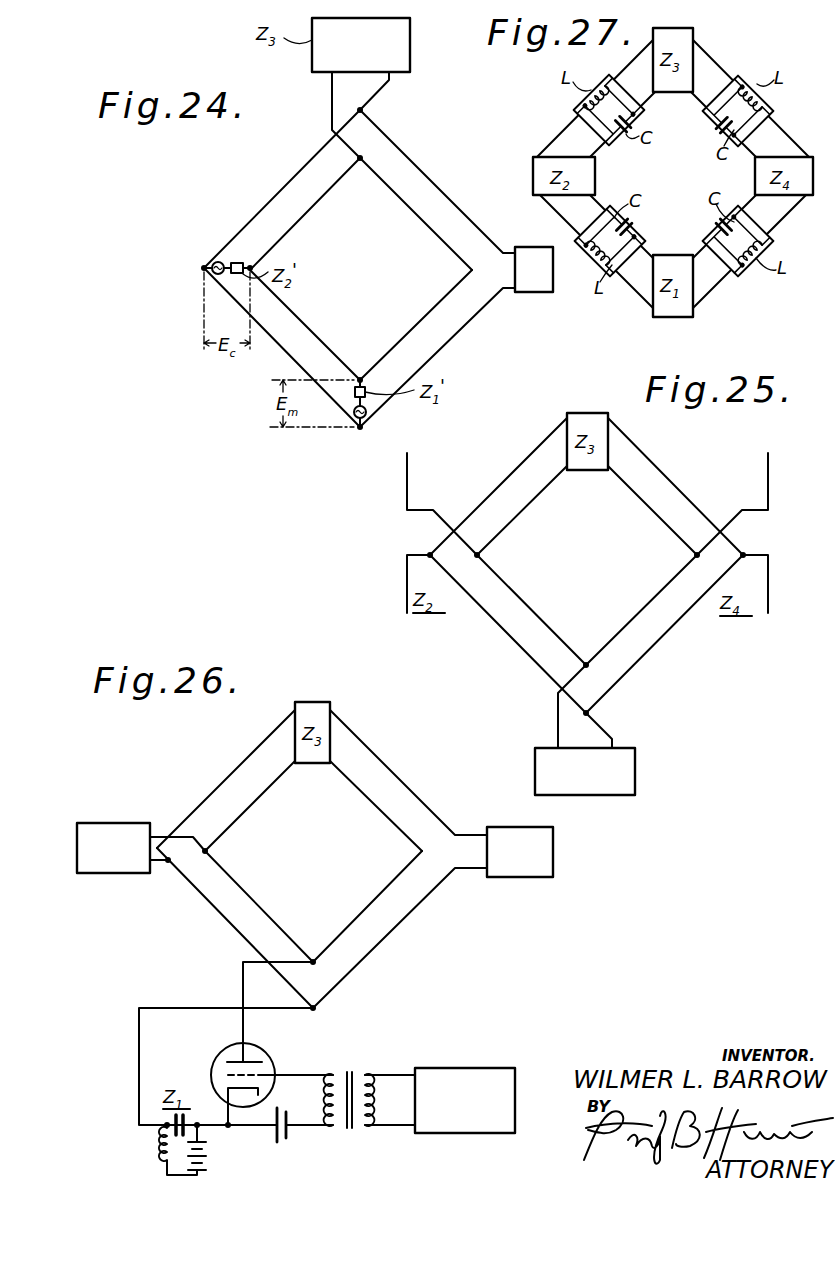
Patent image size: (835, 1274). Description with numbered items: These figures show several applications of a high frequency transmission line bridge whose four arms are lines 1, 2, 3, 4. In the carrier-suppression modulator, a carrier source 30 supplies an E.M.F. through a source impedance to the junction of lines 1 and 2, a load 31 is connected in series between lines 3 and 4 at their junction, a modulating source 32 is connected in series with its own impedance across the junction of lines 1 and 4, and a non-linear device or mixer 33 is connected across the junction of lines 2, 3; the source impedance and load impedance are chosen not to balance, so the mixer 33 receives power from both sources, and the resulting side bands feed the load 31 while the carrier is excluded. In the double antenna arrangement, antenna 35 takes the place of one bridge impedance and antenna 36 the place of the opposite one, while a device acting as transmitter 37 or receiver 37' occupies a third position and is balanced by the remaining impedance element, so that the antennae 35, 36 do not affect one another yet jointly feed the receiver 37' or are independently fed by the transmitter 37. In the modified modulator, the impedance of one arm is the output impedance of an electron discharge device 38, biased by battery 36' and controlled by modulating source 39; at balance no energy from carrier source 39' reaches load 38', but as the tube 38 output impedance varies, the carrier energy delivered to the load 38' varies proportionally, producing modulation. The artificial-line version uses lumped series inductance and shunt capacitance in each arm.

In FIG. 24, the line 1 is at (282, 347).
In FIG. 27, the line 1 is at (596, 251).
In FIG. 25, the line 1 is at (508, 634).
In FIG. 26, the line 1 is at (235, 928).
In FIG. 24, the line 2 is at (282, 190).
In FIG. 27, the line 2 is at (596, 98).
In FIG. 25, the line 2 is at (498, 486).
In FIG. 26, the line 2 is at (226, 780).
In FIG. 24, the line 3 is at (437, 190).
In FIG. 27, the line 3 is at (750, 98).
In FIG. 25, the line 3 is at (675, 486).
In FIG. 26, the line 3 is at (408, 780).
In FIG. 24, the line 4 is at (437, 348).
In FIG. 27, the line 4 is at (749, 251).
In FIG. 25, the line 4 is at (664, 634).
In FIG. 26, the line 4 is at (400, 929).
In FIG. 24, the carrier source 30 is at (216, 262).
In FIG. 24, the load 31 is at (536, 292).
In FIG. 24, the modulating source 32 is at (366, 414).
In FIG. 24, the non-linear device or mixer 33 is at (410, 60).
In FIG. 25, the antenna 35 is at (407, 472).
In FIG. 25, the antenna 36 is at (731, 533).
In FIG. 25, the transmitter 37 is at (611, 728).
In FIG. 25, the receiver 37' is at (611, 794).
In FIG. 26, the electron discharge device 38 is at (272, 1076).
In FIG. 26, the load 38' is at (545, 852).
In FIG. 26, the modulating source 39 is at (465, 1082).
In FIG. 26, the carrier source 39' is at (142, 832).
In FIG. 26, the battery 36' is at (306, 1133).